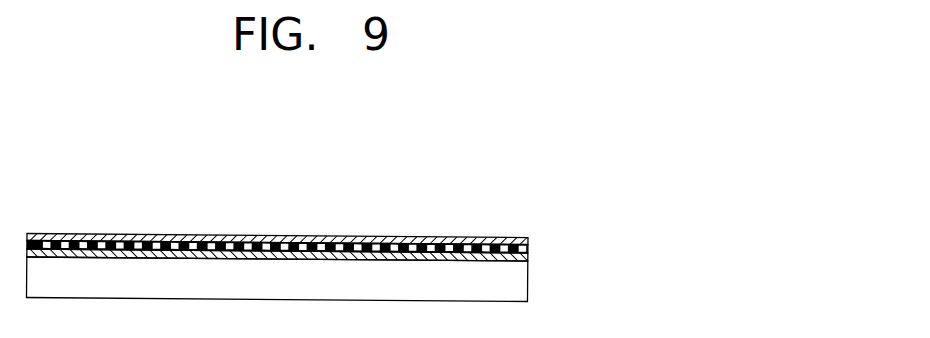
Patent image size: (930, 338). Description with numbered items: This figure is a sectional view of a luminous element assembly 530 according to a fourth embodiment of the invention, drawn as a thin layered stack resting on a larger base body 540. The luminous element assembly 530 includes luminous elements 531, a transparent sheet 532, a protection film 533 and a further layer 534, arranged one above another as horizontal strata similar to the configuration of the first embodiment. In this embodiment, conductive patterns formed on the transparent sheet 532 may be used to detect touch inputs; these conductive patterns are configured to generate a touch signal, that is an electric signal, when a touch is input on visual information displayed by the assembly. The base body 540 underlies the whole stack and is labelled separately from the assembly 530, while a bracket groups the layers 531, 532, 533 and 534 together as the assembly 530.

The luminous element assembly 530 is at (279, 197).
The luminous elements 531 is at (432, 238).
The transparent sheet 532 is at (387, 238).
The protection film 533 is at (333, 240).
The lower layer 534 is at (443, 168).
The substrate 540 is at (523, 274).